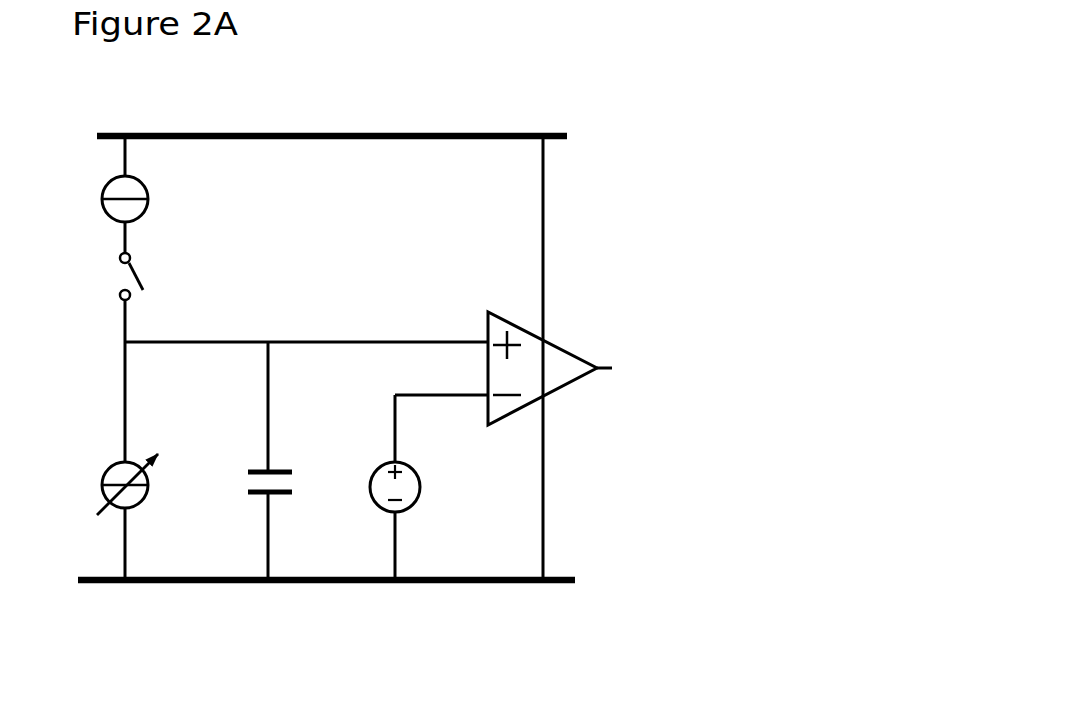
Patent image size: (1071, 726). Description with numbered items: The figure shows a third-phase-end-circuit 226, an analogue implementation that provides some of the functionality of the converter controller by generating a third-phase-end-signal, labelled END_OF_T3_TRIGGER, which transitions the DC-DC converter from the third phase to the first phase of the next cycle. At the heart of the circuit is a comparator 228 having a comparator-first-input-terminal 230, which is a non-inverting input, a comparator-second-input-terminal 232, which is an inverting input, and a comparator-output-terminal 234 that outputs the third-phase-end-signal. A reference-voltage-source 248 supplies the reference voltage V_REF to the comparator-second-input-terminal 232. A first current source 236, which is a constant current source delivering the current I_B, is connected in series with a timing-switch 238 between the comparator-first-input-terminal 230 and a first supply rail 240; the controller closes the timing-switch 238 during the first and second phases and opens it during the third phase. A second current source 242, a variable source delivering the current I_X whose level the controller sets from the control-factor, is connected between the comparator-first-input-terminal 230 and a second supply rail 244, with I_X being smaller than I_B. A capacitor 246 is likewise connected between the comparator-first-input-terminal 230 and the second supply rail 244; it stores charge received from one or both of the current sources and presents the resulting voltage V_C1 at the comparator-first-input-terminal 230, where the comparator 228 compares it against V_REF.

The third-phase-end-circuit 226 is at (622, 143).
The comparator 228 is at (562, 347).
The comparator-first-input-terminal 230 is at (477, 330).
The comparator-second-input-terminal 232 is at (483, 385).
The comparator-output-terminal 234 is at (602, 385).
The first current source 236 is at (105, 180).
The timing-switch 238 is at (118, 270).
The first supply rail 240 is at (445, 130).
The second current source 242 is at (105, 468).
The second supply rail 244 is at (492, 585).
The capacitor 246 is at (257, 468).
The reference-voltage-source 248 is at (377, 466).